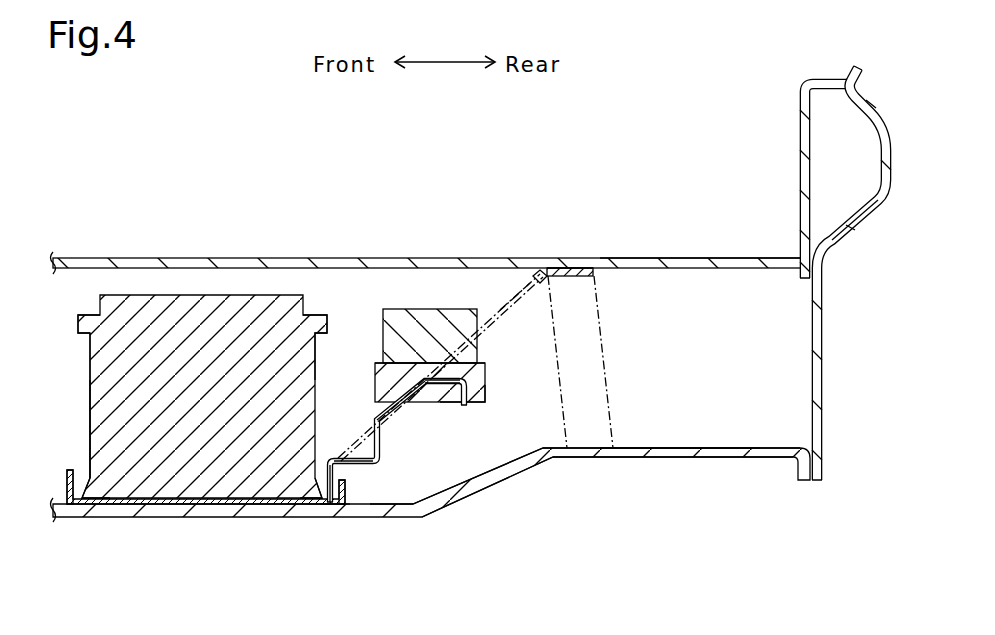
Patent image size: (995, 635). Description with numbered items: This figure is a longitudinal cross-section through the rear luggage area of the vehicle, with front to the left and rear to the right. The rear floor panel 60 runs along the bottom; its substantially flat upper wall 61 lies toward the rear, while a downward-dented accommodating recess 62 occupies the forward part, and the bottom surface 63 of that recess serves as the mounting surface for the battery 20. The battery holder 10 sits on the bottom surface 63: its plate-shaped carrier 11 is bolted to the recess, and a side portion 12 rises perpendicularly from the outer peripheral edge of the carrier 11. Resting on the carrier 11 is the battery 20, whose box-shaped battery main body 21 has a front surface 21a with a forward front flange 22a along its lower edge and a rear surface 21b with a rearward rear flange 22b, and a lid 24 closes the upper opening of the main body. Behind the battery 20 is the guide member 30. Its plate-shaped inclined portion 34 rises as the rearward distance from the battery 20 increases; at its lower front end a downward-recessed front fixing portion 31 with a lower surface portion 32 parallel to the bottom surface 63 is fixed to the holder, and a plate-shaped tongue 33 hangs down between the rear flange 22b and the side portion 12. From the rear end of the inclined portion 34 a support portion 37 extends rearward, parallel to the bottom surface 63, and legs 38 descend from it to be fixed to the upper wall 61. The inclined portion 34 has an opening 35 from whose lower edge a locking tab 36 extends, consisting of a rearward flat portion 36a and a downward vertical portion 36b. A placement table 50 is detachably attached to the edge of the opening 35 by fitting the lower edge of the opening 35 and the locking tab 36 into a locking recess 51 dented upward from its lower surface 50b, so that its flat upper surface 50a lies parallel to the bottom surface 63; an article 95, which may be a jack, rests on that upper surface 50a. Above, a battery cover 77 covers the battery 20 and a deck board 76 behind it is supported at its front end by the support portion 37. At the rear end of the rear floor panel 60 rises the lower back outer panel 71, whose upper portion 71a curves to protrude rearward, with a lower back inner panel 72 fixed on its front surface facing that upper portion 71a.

The battery holder 10 is at (120, 506).
The carrier 11 is at (185, 512).
The side portion 12 is at (68, 462).
The battery 20 is at (100, 297).
The battery main body 21 is at (90, 360).
The front surface 21a is at (90, 395).
The rear surface 21b is at (316, 350).
The front flange 22a is at (84, 488).
The rear flange 22b is at (321, 468).
The lid 24 is at (78, 320).
The guide member 30 is at (550, 266).
The front fixing portion 31 is at (378, 447).
The lower surface portion 32 is at (334, 483).
The tongue 33 is at (338, 506).
The inclined portion 34 is at (531, 278).
The opening 35 is at (526, 295).
The locking tab 36 is at (493, 420).
The flat portion 36a is at (443, 388).
The vertical portion 36b is at (466, 404).
The support portion 37 is at (583, 268).
The legs 38 is at (608, 352).
The placement table 50 is at (486, 383).
The upper surface 50a is at (486, 368).
The lower surface 50b is at (486, 398).
The locking recess 51 is at (400, 403).
The rear floor panel 60 is at (766, 448).
The upper wall 61 is at (710, 448).
The accommodating recess 62 is at (492, 478).
The bottom surface 63 is at (388, 500).
The lower back outer panel 71 is at (823, 386).
The upper portion 71a is at (857, 223).
The lower back inner panel 72 is at (800, 130).
The deck board 76 is at (666, 258).
The battery cover 77 is at (280, 257).
The article 95 is at (392, 310).